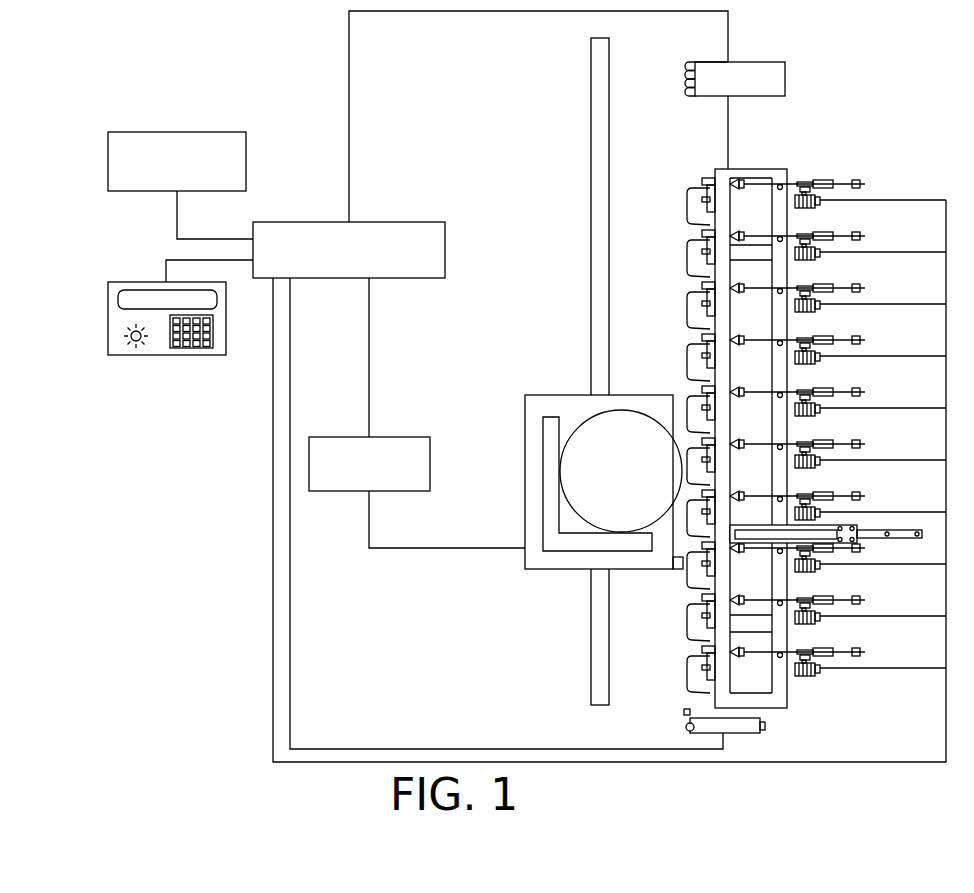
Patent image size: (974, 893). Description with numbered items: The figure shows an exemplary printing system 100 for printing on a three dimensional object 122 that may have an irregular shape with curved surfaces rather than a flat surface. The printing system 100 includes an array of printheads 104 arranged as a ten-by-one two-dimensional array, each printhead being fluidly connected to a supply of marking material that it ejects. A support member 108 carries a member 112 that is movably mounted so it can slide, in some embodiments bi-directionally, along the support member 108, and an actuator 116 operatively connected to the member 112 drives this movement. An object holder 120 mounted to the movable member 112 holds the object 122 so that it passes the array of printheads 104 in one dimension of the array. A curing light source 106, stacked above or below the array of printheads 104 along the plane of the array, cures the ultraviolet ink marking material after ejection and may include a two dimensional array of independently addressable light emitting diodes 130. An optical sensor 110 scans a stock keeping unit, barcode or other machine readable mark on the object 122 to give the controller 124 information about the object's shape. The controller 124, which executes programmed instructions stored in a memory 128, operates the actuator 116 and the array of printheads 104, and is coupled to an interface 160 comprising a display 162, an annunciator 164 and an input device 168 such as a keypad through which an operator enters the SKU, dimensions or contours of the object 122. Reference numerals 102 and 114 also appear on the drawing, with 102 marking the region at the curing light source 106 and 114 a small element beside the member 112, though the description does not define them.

The printing system 100 is at (198, 63).
The dispensing head 102 is at (690, 62).
The array of printheads 104 is at (673, 283).
The curing light source 106 is at (740, 77).
The support member 108 is at (591, 628).
The optical sensor 110 is at (765, 728).
The member 112 is at (563, 472).
The sensor 114 is at (682, 571).
The actuator 116 is at (400, 437).
The object holder 120 is at (543, 453).
The object 122 is at (580, 426).
The controller 124 is at (393, 279).
The memory 128 is at (108, 162).
The light emitting diodes 130 is at (683, 68).
The interface 160 is at (164, 326).
The display 162 is at (138, 289).
The annunciator 164 is at (130, 338).
The input device 168 is at (203, 349).